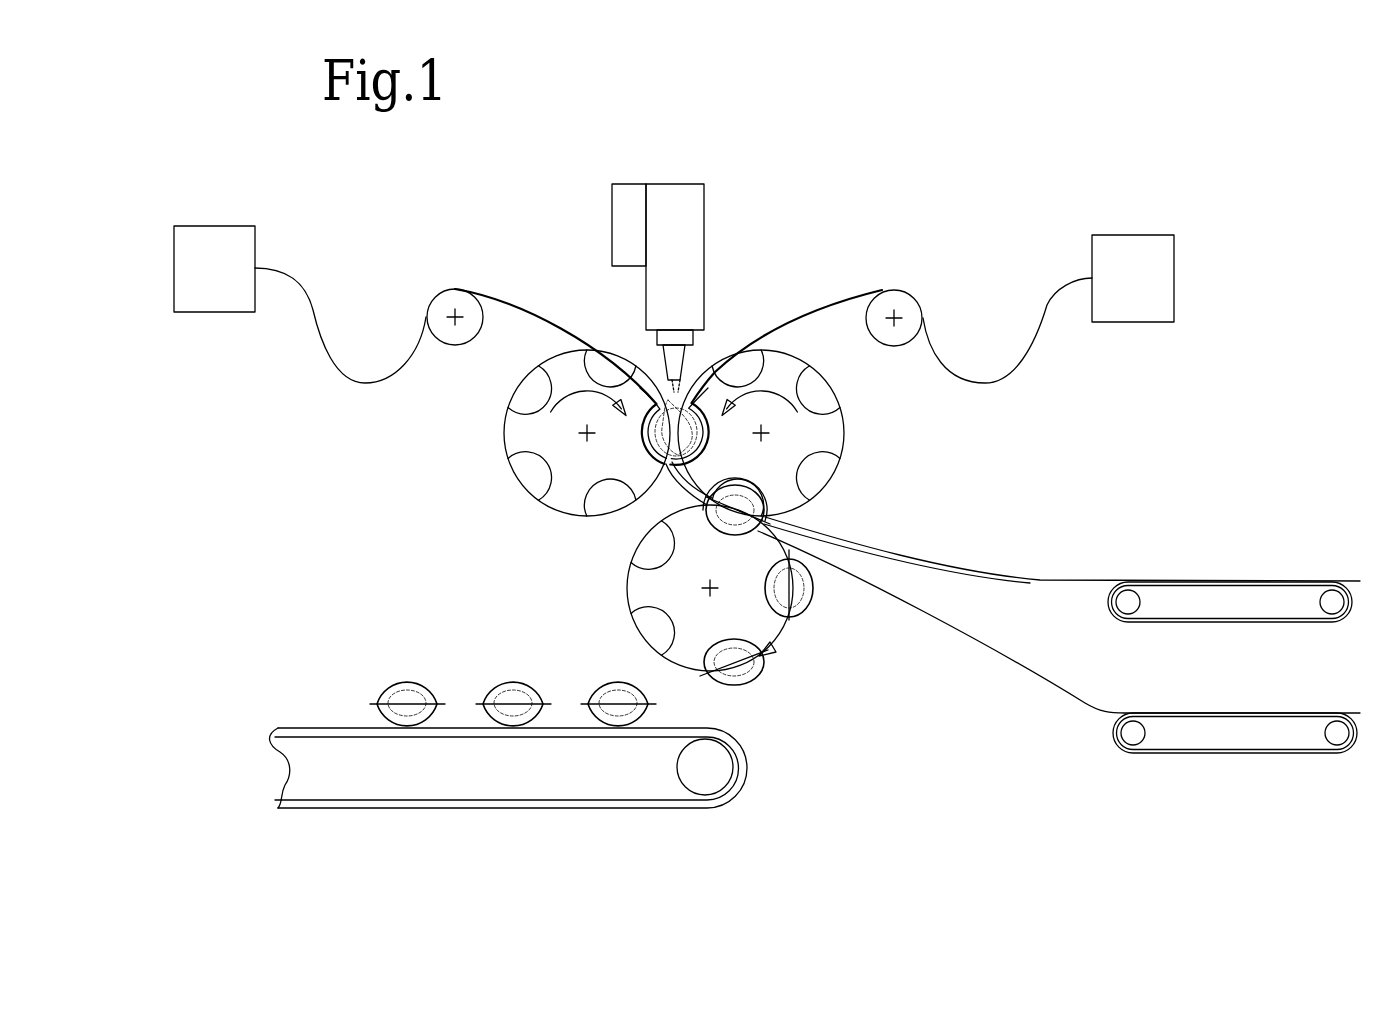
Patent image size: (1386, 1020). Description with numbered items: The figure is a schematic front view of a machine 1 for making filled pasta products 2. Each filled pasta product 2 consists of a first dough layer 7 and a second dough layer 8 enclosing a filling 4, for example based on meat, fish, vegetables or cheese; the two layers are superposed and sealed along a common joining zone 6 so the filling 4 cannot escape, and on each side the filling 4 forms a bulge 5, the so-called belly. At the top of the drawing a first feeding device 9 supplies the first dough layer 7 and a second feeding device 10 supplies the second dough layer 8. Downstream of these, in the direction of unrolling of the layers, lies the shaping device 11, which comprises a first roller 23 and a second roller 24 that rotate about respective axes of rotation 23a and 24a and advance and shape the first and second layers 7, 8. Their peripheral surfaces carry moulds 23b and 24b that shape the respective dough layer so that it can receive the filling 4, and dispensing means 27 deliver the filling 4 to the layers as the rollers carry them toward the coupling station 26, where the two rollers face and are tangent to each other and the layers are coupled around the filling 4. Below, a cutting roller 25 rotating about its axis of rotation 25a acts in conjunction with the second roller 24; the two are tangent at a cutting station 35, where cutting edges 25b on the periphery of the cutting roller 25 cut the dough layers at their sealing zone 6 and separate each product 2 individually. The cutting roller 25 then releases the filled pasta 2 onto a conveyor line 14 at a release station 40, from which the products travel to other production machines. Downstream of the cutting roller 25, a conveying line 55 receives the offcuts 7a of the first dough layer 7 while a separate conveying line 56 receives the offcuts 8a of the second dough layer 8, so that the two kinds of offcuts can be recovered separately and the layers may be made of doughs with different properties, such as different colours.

The machine for making filled pasta products 1 is at (945, 210).
The filled pasta product 2 is at (398, 660).
The filling 4 is at (683, 430).
The bulge 5 is at (529, 655).
The joining zone 6 is at (377, 704).
The first dough layer 7 is at (540, 318).
The offcuts of the first dough layer 7a is at (1058, 580).
The second dough layer 8 is at (818, 309).
The offcuts of the second dough layer 8a is at (1063, 677).
The first feeding device 9 is at (300, 304).
The second feeding device 10 is at (1048, 309).
The shaping device 11 is at (450, 449).
The conveyor line 14 is at (815, 775).
The first roller 23 is at (508, 428).
The axis of rotation of the first roller 23a is at (587, 433).
The moulds of the first roller 23b is at (522, 385).
The second roller 24 is at (846, 437).
The axis of rotation of the second roller 24a is at (761, 433).
The moulds of the second roller 24b is at (832, 391).
The cutting roller 25 is at (628, 602).
The axis of rotation of the cutting roller 25a is at (710, 588).
The cutting edges 25b is at (640, 548).
The coupling station 26 is at (707, 345).
The dispensing means 27 is at (658, 288).
The cutting station 35 is at (797, 522).
The release station 40 is at (735, 716).
The conveying line for offcuts of the first dough layer 55 is at (1262, 641).
The conveying line for offcuts of the second dough layer 56 is at (1214, 775).